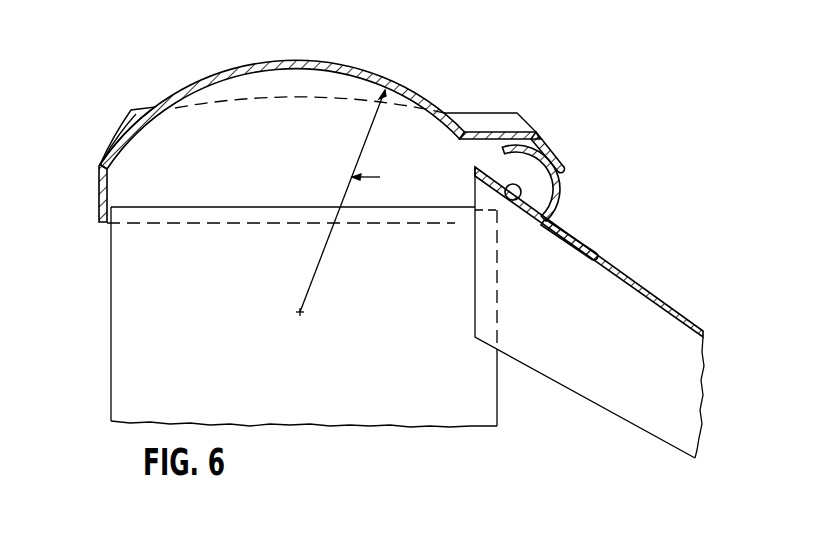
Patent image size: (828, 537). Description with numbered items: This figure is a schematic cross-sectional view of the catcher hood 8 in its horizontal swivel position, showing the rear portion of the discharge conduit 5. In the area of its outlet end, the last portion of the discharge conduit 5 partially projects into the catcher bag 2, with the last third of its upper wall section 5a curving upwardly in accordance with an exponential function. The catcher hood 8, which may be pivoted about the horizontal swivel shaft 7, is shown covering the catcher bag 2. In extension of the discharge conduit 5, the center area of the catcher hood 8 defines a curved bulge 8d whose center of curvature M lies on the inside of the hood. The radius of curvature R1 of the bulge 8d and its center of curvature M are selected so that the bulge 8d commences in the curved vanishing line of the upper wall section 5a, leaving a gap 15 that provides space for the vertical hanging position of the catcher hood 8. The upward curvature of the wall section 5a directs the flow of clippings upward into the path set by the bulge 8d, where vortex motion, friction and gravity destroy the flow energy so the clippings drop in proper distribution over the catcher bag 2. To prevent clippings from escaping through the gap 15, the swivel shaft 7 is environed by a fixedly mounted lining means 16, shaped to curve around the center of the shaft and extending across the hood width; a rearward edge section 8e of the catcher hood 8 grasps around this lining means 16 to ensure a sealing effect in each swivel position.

The catcher bag 2 is at (132, 350).
The discharge conduit 5 is at (636, 379).
The upper wall section 5a is at (632, 292).
The horizontal swivel shaft 7 is at (521, 193).
The catcher hood 8 is at (134, 118).
The curved bulge 8d is at (320, 63).
The rearward edge section 8e is at (518, 134).
The gap 15 is at (467, 150).
The lining means 16 is at (558, 204).
The center of curvature M is at (341, 218).
The radius of curvature R1 is at (381, 181).